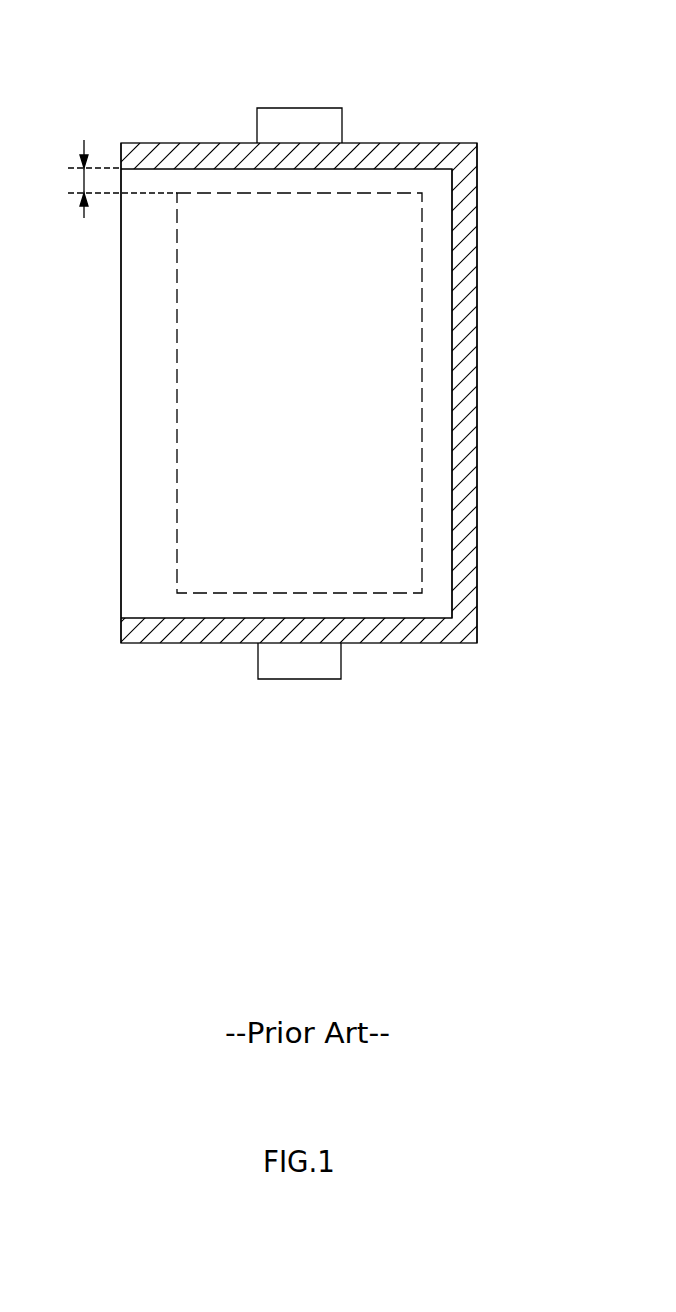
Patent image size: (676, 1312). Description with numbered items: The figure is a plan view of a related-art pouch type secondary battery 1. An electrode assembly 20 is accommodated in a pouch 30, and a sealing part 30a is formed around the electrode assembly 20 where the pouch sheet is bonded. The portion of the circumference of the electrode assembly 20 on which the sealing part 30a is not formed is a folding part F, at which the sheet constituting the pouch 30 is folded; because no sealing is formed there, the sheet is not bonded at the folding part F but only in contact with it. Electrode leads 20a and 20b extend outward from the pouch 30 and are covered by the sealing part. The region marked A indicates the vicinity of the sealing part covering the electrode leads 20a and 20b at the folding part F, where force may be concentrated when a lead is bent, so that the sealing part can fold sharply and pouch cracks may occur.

The secondary battery 1 is at (396, 76).
The electrode assembly 20 is at (230, 437).
The electrode lead 20a is at (257, 125).
The electrode lead 20b is at (300, 665).
The pouch 30 is at (145, 553).
The sealing part 30a is at (465, 433).
The folding part F is at (121, 392).
The vicinity of the sealing part A is at (114, 179).